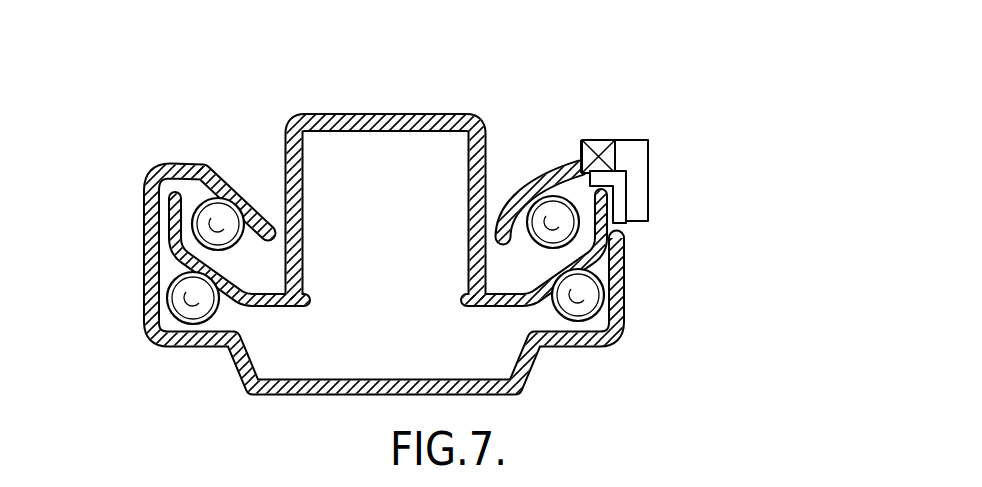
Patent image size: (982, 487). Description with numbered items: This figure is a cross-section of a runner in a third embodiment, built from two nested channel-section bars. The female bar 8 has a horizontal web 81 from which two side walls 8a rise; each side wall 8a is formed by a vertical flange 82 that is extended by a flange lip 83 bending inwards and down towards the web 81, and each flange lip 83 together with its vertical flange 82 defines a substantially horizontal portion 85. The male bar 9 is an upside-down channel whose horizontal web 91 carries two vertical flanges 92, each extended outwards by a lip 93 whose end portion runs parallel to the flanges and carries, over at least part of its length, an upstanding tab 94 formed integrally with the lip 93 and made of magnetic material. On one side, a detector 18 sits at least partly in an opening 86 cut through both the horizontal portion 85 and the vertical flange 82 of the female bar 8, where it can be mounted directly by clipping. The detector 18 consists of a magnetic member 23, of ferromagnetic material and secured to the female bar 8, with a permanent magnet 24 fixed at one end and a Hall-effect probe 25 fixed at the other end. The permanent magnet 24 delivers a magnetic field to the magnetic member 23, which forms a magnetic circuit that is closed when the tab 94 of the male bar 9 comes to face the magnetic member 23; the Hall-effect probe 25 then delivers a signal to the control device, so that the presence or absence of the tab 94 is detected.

The female bar 8 is at (369, 280).
The side wall 8a is at (139, 255).
The horizontal web 81 is at (337, 400).
The vertical flange 82 is at (143, 297).
The flange lip 83 is at (242, 182).
The horizontal portion 85 is at (183, 163).
The opening 86 is at (582, 140).
The male bar 9 is at (388, 198).
The horizontal web 91 is at (360, 113).
The vertical flange 92 is at (477, 237).
The lip 93 is at (263, 305).
The upstanding tab 94 is at (143, 192).
The detector 18 is at (638, 150).
The magnetic member 23 is at (650, 178).
The permanent magnet 24 is at (605, 140).
The Hall-effect probe 25 is at (630, 210).